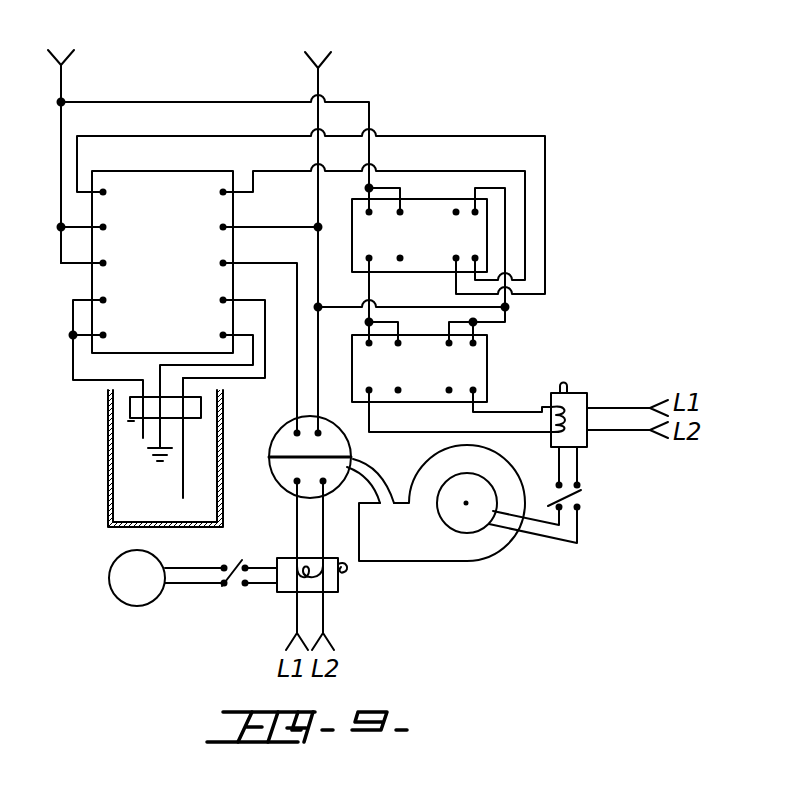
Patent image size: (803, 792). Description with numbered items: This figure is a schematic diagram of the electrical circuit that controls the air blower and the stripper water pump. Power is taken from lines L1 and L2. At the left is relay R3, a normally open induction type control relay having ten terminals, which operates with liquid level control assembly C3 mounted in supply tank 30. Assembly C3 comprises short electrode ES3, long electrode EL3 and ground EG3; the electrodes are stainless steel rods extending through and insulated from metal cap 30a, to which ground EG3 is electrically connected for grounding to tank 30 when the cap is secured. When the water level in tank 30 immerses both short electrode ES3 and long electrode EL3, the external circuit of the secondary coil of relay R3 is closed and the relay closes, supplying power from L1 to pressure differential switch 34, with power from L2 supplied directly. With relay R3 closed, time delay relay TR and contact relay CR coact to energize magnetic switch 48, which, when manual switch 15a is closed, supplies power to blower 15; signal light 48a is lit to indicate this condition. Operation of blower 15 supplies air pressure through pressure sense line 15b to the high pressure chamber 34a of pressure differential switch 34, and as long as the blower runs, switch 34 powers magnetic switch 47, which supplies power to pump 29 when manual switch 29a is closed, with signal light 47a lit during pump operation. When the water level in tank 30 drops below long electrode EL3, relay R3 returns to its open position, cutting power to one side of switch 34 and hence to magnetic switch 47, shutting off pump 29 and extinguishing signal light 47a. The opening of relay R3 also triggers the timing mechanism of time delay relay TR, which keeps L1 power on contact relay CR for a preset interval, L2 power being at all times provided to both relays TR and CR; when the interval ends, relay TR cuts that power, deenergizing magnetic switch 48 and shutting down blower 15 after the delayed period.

The power line L1 is at (59, 141).
The power line L2 is at (317, 226).
The relay R3 is at (165, 172).
The time delay relay TR is at (430, 199).
The contact relay CR is at (488, 352).
The magnetic switch 48 is at (586, 439).
The signal light 48a is at (566, 387).
The blower 15 is at (507, 472).
The manual switch 15a is at (582, 491).
The pressure sense line 15b is at (383, 479).
The pressure differential switch 34 is at (275, 435).
The high pressure chamber 34a is at (287, 469).
The liquid level control assembly C3 is at (131, 408).
The supply tank 30 is at (110, 488).
The metal cap 30a is at (130, 422).
The short electrode ES3 is at (141, 428).
The ground EG3 is at (152, 462).
The long electrode EL3 is at (187, 486).
The pump 29 is at (111, 565).
The manual switch 29a is at (238, 560).
The magnetic switch 47 is at (280, 595).
The signal light 47a is at (344, 576).